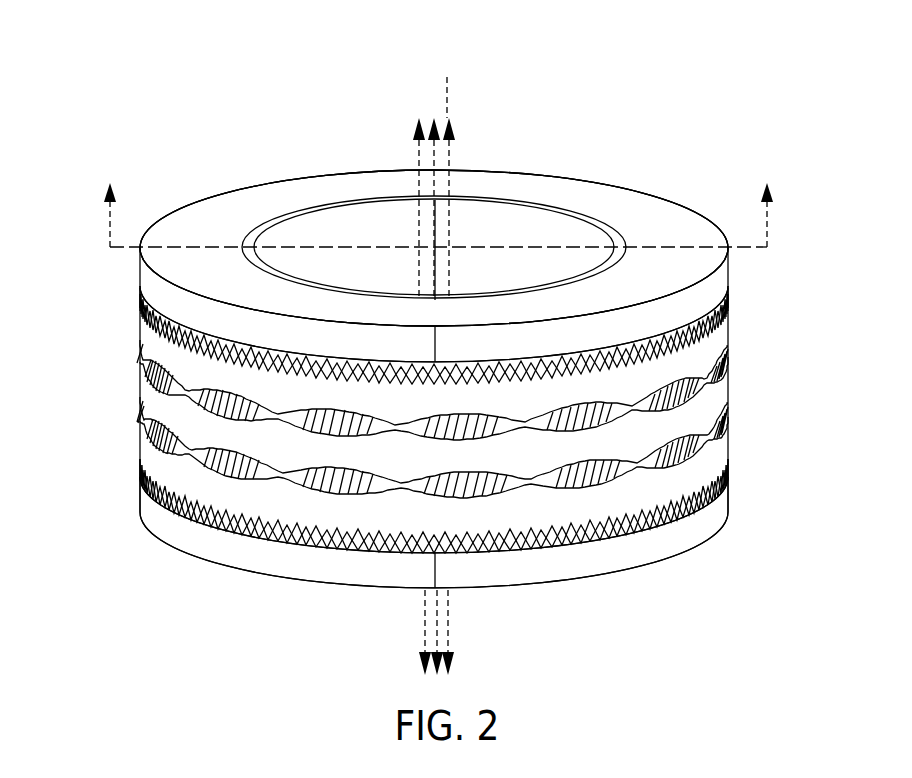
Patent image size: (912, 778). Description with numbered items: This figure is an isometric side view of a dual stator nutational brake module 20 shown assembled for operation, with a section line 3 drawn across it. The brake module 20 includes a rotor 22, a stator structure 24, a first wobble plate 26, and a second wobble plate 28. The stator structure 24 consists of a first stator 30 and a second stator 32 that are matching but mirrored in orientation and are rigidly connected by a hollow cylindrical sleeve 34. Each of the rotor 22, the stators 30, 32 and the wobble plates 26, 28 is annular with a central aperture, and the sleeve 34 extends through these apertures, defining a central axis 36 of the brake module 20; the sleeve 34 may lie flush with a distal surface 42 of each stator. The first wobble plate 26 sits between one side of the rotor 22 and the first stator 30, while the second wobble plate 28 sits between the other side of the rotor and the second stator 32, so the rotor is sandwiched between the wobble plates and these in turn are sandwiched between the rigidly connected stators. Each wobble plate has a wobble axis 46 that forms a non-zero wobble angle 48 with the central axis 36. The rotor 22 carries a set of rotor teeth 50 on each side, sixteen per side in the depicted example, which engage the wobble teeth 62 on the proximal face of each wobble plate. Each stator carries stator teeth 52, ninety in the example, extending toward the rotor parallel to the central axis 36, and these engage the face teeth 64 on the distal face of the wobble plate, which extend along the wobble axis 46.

The section line 3- 3 is at (439, 193).
The brake module 20 is at (124, 78).
The rotor 22 is at (460, 452).
The stator structure 24 is at (236, 148).
The first wobble plate 26 is at (718, 330).
The second wobble plate 28 is at (718, 460).
The first stator 30 is at (718, 282).
The second stator 32 is at (718, 513).
The hollow cylindrical sleeve 34 is at (557, 206).
The central axis 36 is at (447, 313).
The distal surface 42 is at (655, 208).
The wobble axis 46 is at (412, 150).
The wobble angle 48 is at (430, 210).
The rotor teeth 50 is at (310, 437).
The stator teeth 52 is at (243, 348).
The wobble teeth 62 is at (400, 415).
The face teeth 64 is at (247, 372).